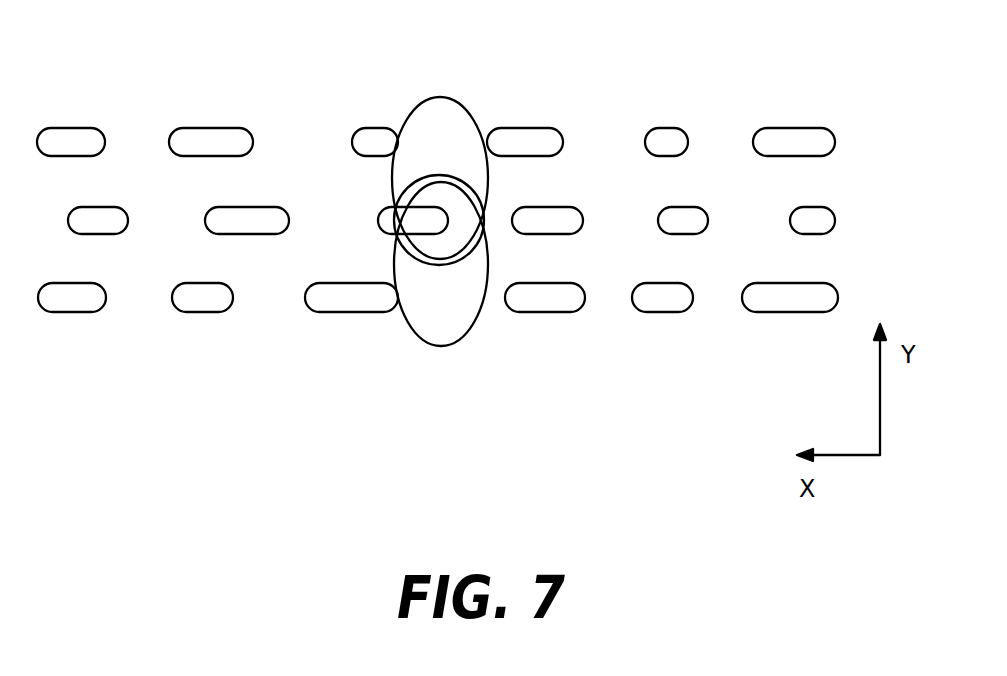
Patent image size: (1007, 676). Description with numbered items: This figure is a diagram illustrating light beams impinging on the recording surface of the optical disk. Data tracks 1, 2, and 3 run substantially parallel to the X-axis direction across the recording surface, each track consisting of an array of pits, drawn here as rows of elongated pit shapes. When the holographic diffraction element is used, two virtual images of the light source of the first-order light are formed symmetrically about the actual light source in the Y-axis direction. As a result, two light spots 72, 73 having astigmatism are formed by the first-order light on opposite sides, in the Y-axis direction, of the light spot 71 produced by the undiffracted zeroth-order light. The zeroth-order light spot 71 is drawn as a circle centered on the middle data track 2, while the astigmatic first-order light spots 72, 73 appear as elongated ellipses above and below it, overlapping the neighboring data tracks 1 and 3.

The data track 1 is at (835, 142).
The data track 2 is at (835, 222).
The data track 3 is at (838, 298).
The light spot of zeroth-order light 71 is at (438, 265).
The light spot of first-order light 72 is at (467, 105).
The light spot of first-order light 73 is at (463, 335).